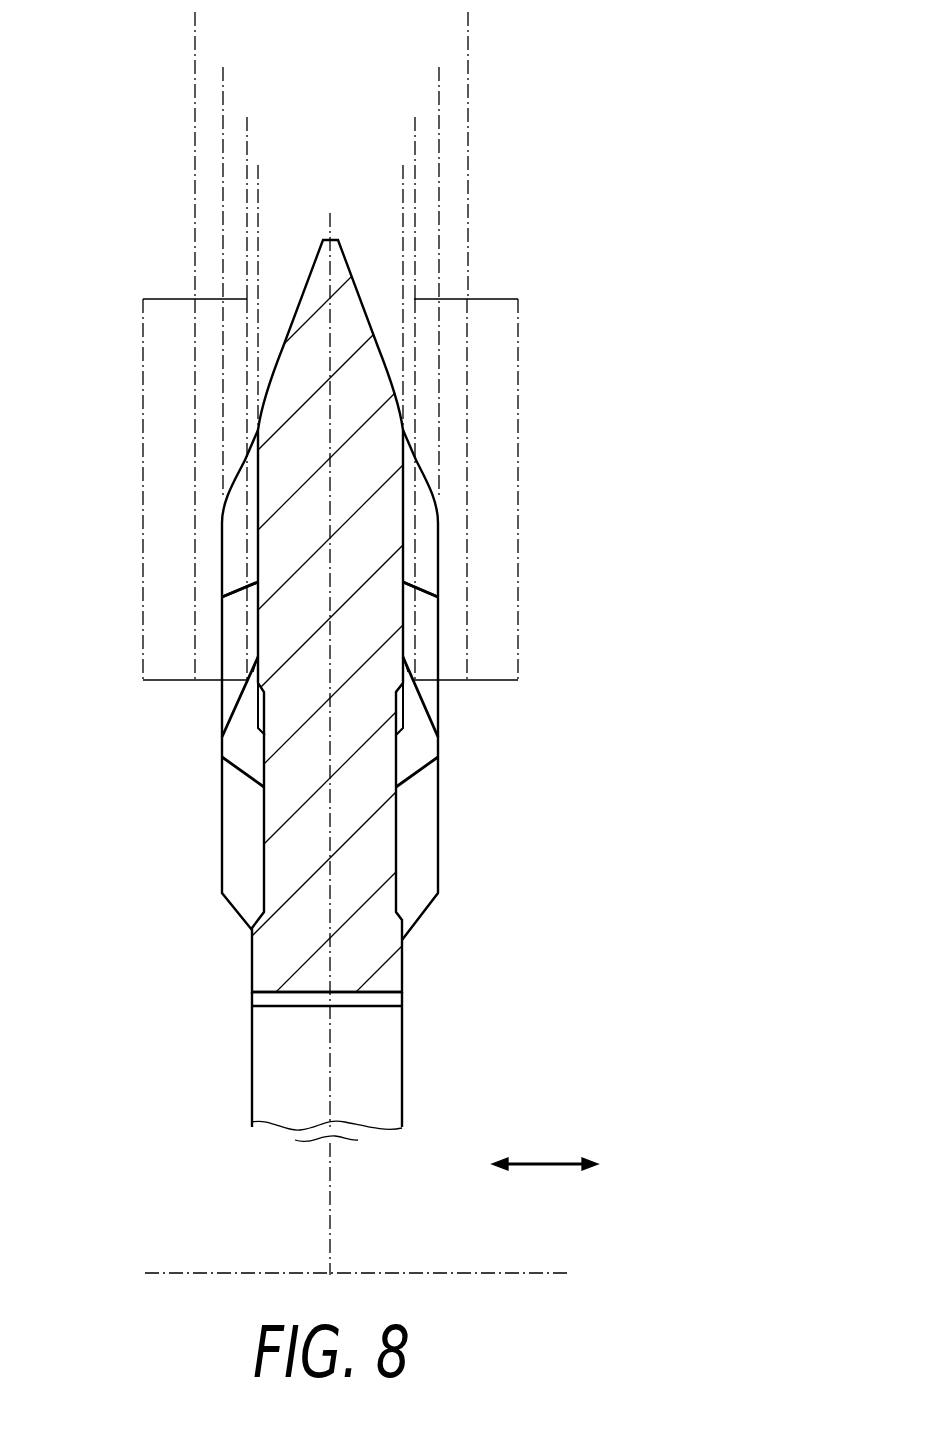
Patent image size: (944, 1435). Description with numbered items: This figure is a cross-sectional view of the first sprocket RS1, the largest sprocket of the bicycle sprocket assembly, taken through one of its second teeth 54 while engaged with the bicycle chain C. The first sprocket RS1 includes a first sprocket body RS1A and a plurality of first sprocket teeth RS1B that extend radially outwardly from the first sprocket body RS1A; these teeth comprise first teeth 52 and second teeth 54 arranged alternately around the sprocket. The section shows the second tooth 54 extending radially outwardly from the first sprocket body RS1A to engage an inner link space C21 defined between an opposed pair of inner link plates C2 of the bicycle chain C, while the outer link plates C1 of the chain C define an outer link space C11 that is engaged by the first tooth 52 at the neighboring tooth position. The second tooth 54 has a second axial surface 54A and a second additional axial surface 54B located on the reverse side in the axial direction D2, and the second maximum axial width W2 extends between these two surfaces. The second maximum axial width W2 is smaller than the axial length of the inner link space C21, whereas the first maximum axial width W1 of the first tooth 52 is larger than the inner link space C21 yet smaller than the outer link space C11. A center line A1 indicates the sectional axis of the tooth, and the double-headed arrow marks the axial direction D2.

The outer link space C11 is at (195, 33).
The first maximum axial width W1 is at (223, 80).
The inner link space C21 is at (247, 135).
The second maximum axial width W2 is at (258, 191).
The bicycle chain C is at (330, 444).
The outer link plates C1 is at (143, 325).
The inner link plates C2 is at (195, 393).
The first sprocket RS1 is at (163, 785).
The first sprocket body RS1A is at (247, 983).
The first sprocket teeth RS1B is at (372, 685).
The second tooth 54 is at (391, 547).
The first tooth 52 is at (235, 863).
The second axial surface 54A is at (403, 612).
The second additional axial surface 54B is at (258, 612).
The axial direction D2 is at (553, 1162).
The reference axis A1 is at (515, 1272).